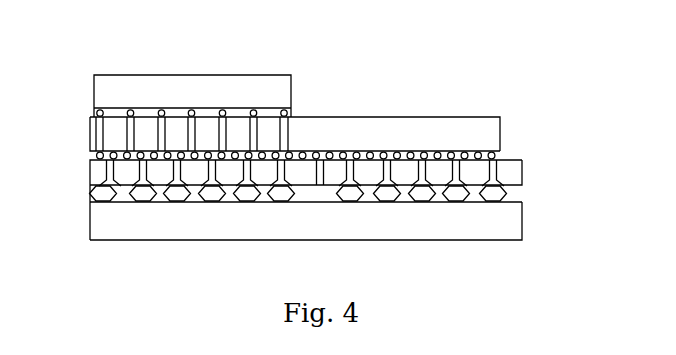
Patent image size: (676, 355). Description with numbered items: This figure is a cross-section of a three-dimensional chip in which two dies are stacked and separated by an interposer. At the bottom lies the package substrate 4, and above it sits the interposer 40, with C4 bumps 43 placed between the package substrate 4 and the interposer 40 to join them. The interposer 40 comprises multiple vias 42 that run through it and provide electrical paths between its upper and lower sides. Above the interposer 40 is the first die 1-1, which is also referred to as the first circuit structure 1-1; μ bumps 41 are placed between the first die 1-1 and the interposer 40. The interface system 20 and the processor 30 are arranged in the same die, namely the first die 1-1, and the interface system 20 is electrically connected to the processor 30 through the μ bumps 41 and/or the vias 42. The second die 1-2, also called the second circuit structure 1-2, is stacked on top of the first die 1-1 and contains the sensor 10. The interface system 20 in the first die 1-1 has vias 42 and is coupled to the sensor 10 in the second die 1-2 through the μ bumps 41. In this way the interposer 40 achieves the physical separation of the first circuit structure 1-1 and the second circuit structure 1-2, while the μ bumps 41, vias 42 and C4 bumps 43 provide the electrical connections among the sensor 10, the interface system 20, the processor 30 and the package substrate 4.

The first die 1-1 is at (312, 153).
The second die 1-2 is at (241, 64).
The sensor 10 is at (291, 75).
The interface system 20 is at (267, 138).
The processor 30 is at (387, 138).
The interposer 40 is at (302, 187).
The package substrate 4 is at (500, 213).
The μ bumps 41 is at (110, 157).
The vias 42 is at (103, 134).
The C4 bumps 43 is at (100, 196).